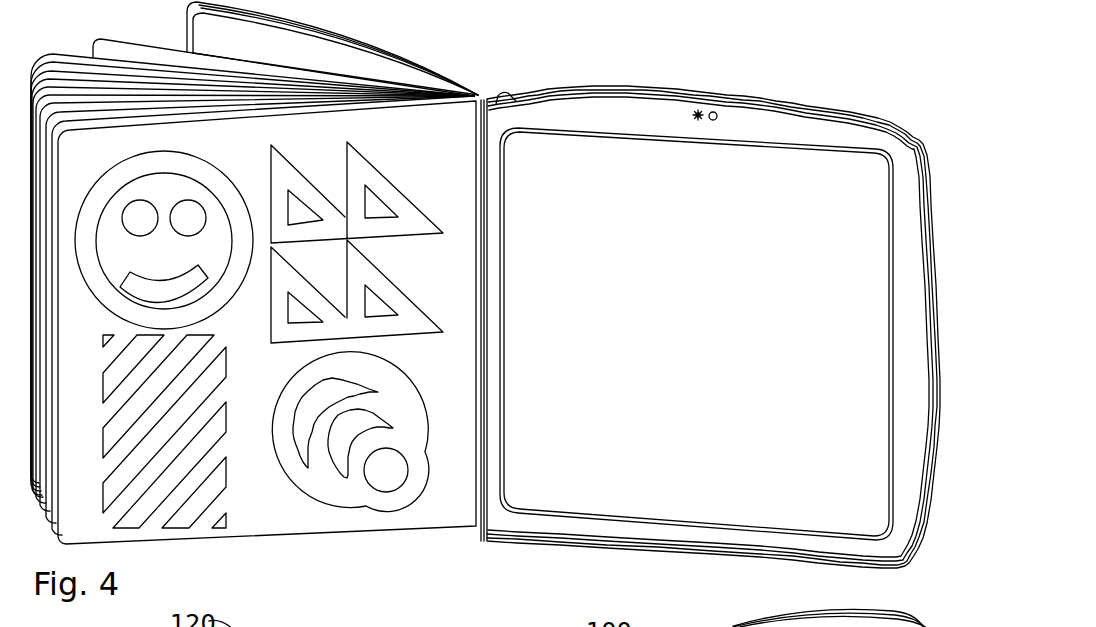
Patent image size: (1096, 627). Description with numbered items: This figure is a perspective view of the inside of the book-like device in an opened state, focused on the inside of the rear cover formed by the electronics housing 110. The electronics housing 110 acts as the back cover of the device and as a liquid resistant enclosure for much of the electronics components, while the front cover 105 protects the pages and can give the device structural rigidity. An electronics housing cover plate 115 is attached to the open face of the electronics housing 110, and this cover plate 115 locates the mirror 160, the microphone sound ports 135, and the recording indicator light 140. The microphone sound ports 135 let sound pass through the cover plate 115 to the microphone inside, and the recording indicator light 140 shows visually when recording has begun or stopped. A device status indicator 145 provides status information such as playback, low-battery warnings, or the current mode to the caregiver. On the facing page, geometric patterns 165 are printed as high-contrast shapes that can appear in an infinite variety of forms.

The front cover 105 is at (360, 37).
The electronics housing 110 is at (853, 110).
The electronics housing cover plate 115 is at (597, 117).
The microphone sound ports 135 is at (693, 113).
The recording indicator light 140 is at (713, 110).
The device status indicator 145 is at (503, 93).
The mirror 160 is at (688, 505).
The geometric patterns 165 is at (378, 517).